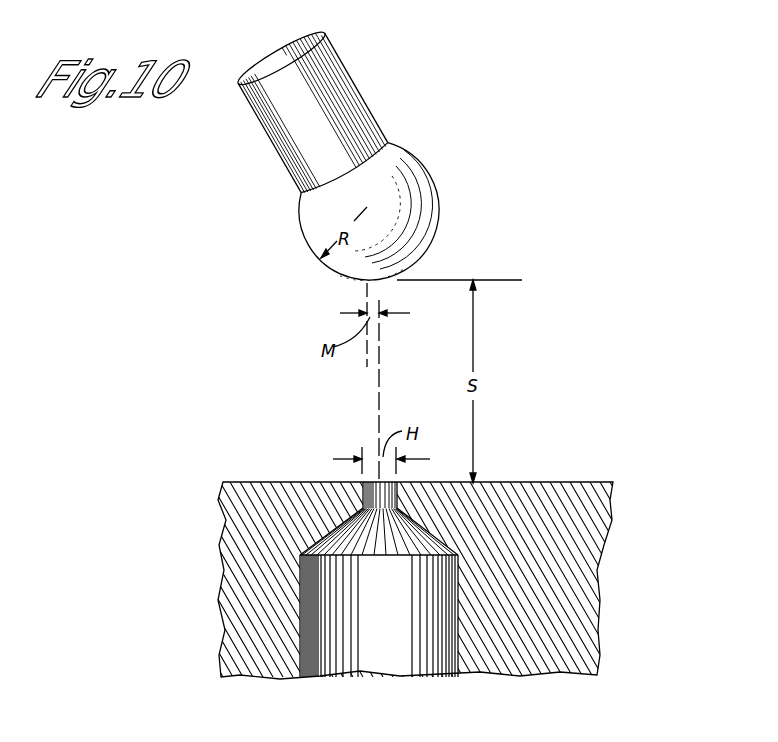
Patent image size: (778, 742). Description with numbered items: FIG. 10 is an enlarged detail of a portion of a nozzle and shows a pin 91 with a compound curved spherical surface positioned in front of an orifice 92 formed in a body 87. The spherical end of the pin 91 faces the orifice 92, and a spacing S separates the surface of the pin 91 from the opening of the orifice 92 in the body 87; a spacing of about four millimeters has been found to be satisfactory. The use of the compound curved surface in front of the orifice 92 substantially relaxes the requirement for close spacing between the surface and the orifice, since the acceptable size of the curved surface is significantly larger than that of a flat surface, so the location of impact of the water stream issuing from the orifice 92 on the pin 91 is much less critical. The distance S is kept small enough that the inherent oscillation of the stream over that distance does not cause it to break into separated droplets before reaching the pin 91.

The ball-ended tool 91 is at (410, 269).
The workpiece block 87 is at (530, 483).
The cavity 92 is at (380, 497).